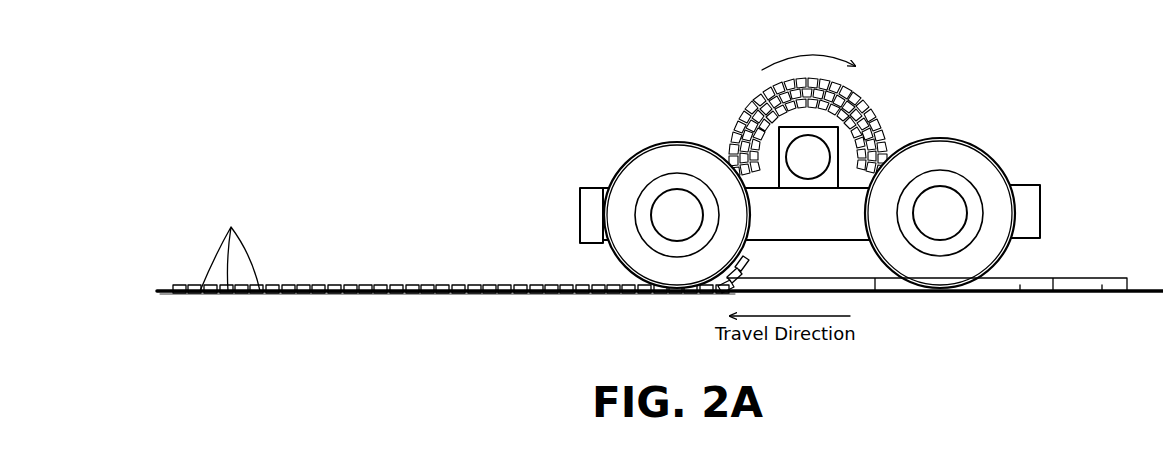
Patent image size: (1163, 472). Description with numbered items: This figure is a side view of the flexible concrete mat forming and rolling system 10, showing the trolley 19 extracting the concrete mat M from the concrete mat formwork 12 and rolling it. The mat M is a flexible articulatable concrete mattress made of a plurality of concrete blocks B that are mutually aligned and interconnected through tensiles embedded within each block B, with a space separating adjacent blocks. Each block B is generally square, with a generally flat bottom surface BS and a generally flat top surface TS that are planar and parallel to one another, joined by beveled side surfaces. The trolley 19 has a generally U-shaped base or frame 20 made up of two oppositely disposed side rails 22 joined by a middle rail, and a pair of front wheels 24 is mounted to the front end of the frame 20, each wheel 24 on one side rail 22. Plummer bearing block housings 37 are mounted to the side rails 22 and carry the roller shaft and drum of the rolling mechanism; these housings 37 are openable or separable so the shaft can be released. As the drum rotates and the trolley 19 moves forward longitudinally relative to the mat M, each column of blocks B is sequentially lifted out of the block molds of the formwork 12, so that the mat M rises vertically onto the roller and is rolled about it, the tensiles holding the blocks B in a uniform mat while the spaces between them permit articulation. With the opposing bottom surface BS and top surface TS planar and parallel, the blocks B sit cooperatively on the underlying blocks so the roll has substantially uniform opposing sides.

The flexible concrete mat forming and rolling system 10 is at (1076, 128).
The concrete mat formwork 12 is at (898, 285).
The trolley 19 is at (935, 110).
The frame 20 is at (1067, 215).
The side rails 22 is at (818, 238).
The front wheels 24 is at (655, 260).
The plummer bearing block housings 37 is at (832, 138).
The concrete blocks B is at (230, 246).
The bottom surface BS is at (380, 287).
The concrete mat M is at (313, 276).
The top surface TS is at (736, 269).